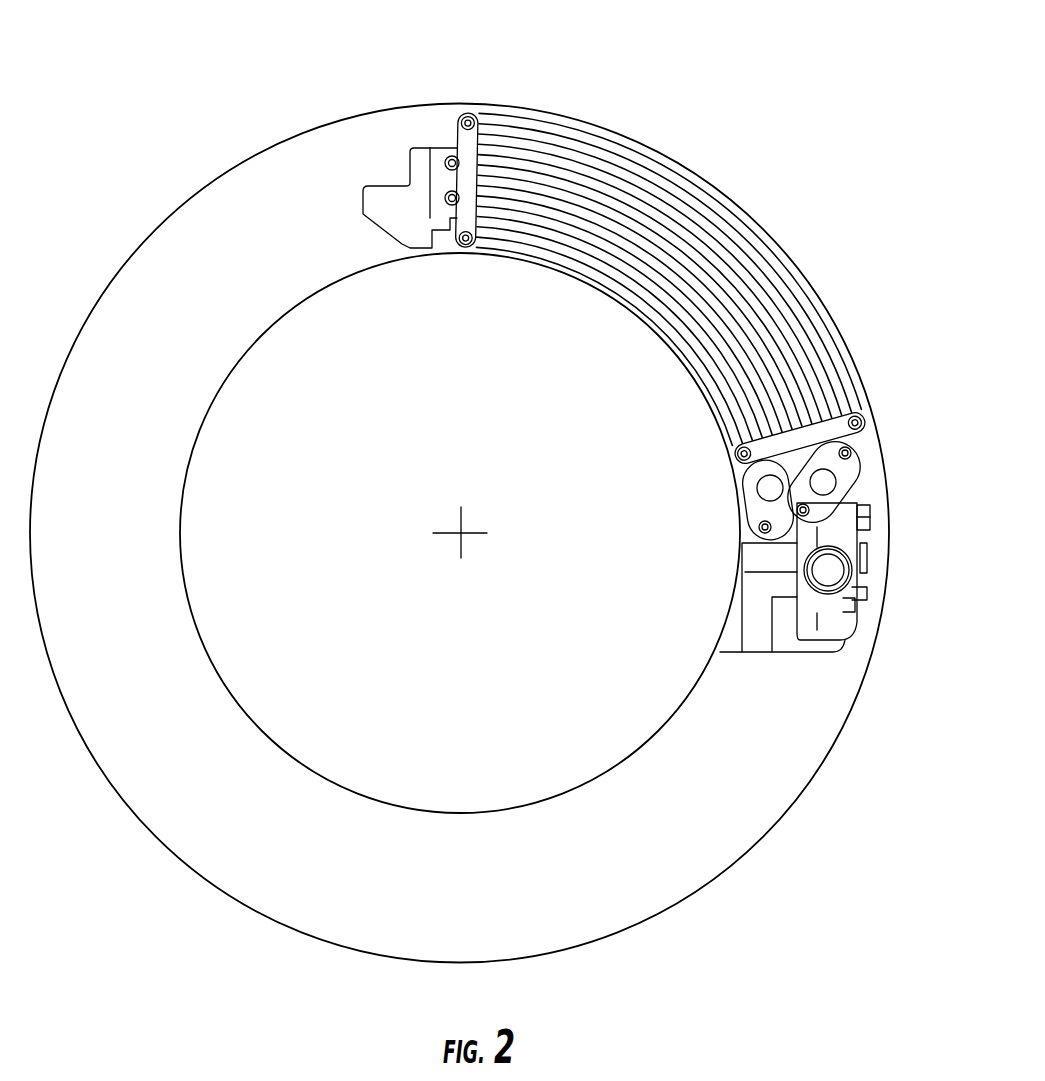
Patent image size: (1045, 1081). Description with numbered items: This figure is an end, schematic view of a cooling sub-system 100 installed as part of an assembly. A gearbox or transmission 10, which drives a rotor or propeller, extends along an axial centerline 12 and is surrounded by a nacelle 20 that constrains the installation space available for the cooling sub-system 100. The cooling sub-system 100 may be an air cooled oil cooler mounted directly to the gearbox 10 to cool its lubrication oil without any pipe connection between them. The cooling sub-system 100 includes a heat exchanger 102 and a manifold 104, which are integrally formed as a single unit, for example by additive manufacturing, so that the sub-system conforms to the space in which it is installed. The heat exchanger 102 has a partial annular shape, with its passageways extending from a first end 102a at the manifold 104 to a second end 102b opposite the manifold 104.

The gearbox or transmission 10 is at (212, 388).
The axial centerline 12 is at (462, 543).
The nacelle 20 is at (145, 244).
The cooling sub-system 100 is at (651, 293).
The heat exchanger 102 is at (807, 311).
The first end of the heat exchanger 102a is at (889, 411).
The second end of the heat exchanger 102b is at (476, 86).
The manifold 104 is at (868, 541).